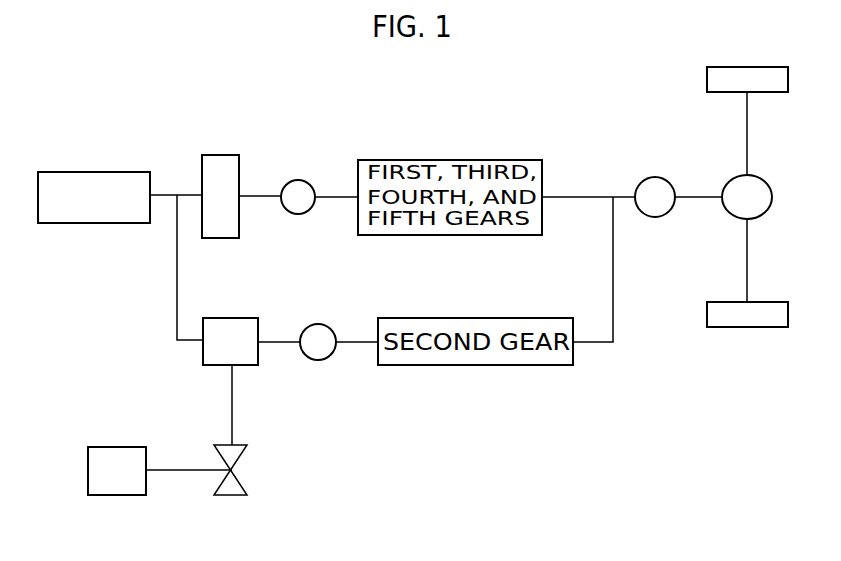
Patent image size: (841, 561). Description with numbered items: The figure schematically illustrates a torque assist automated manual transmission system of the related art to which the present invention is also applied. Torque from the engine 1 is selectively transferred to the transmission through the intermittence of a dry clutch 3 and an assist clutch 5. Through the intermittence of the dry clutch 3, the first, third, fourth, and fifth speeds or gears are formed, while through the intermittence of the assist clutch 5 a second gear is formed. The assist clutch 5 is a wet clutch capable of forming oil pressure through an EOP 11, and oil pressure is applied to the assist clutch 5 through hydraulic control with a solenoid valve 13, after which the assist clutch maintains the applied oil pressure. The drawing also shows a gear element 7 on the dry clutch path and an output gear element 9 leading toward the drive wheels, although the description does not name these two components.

The engine 1 is at (96, 172).
The dry clutch 3 is at (221, 155).
The assist clutch 5 is at (203, 352).
The first input shaft gear 7 is at (299, 180).
The output gear 9 is at (657, 177).
The EOP 11 is at (105, 447).
The solenoid valve 13 is at (318, 360).